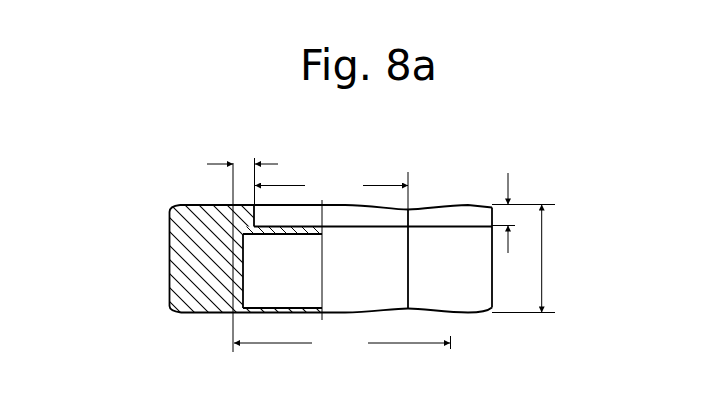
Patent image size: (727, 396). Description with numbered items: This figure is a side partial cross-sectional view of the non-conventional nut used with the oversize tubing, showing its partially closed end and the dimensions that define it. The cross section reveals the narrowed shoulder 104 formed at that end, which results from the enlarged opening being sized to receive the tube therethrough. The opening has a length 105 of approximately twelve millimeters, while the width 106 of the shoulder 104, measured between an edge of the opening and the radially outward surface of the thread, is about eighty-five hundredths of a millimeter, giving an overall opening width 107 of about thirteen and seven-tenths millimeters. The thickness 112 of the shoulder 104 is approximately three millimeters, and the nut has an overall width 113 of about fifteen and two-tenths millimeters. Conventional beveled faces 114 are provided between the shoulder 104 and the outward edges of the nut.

The narrowed shoulder 104 is at (246, 163).
The length of the opening 105 is at (331, 190).
The width of the shoulder 106 is at (239, 163).
The overall opening width 107 is at (342, 278).
The thickness of the shoulder 112 is at (512, 220).
The overall width of the nut 113 is at (526, 259).
The beveled faces 114 is at (175, 208).